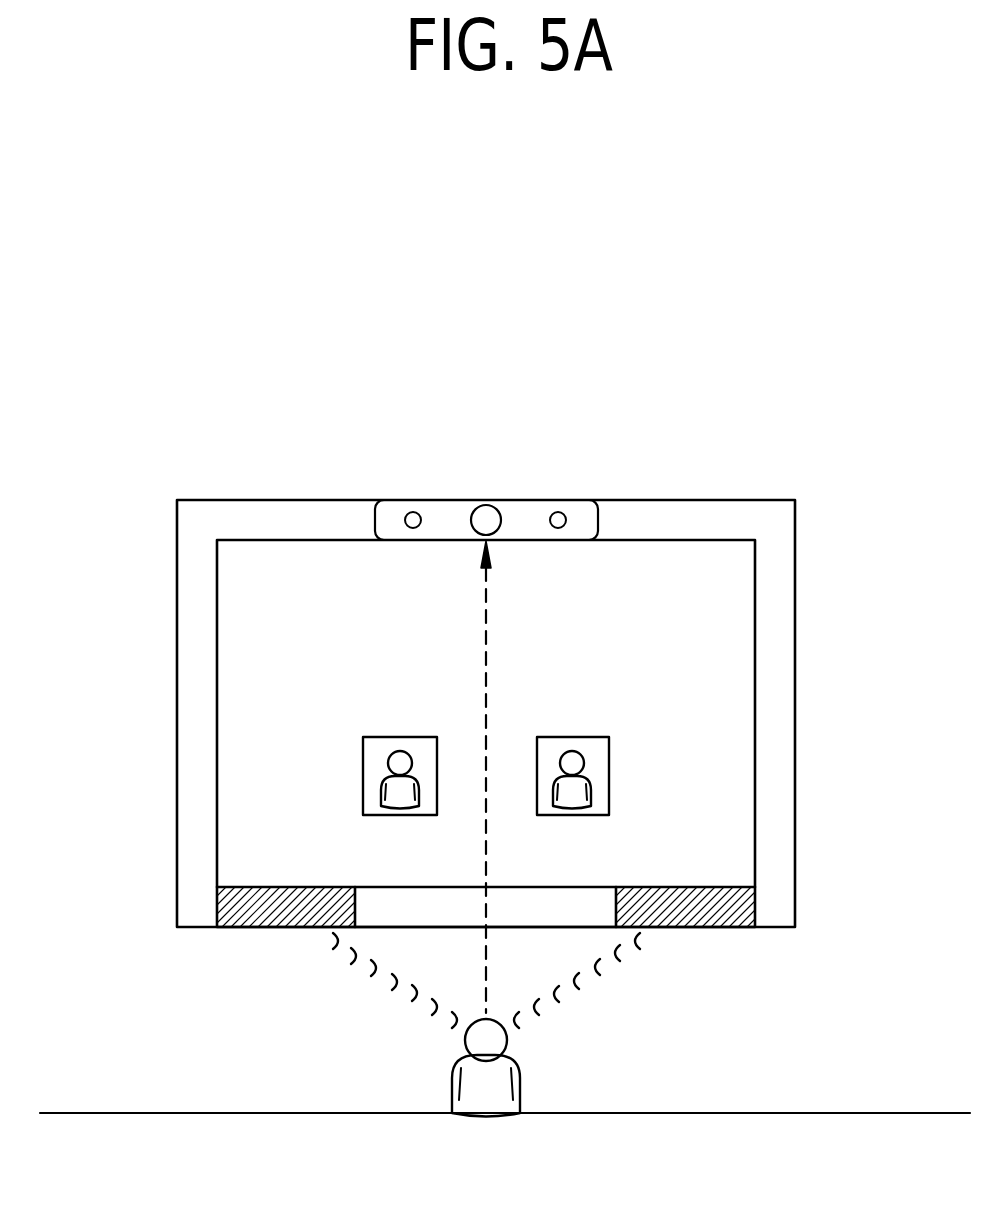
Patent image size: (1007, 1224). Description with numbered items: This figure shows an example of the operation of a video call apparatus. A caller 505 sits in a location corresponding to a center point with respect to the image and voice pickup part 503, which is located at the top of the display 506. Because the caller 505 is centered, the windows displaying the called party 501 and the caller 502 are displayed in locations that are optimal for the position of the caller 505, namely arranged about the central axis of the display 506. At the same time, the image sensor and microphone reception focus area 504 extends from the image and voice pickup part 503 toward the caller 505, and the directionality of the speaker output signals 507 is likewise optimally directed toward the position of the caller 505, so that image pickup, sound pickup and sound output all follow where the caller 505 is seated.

The called party window 501 is at (363, 776).
The caller window 502 is at (609, 773).
The image and voice pickup part 503 is at (591, 489).
The image sensor and microphone reception focus area 504 is at (486, 958).
The caller 505 is at (482, 1100).
The display 506 is at (722, 632).
The speaker output signals 507 is at (388, 988).